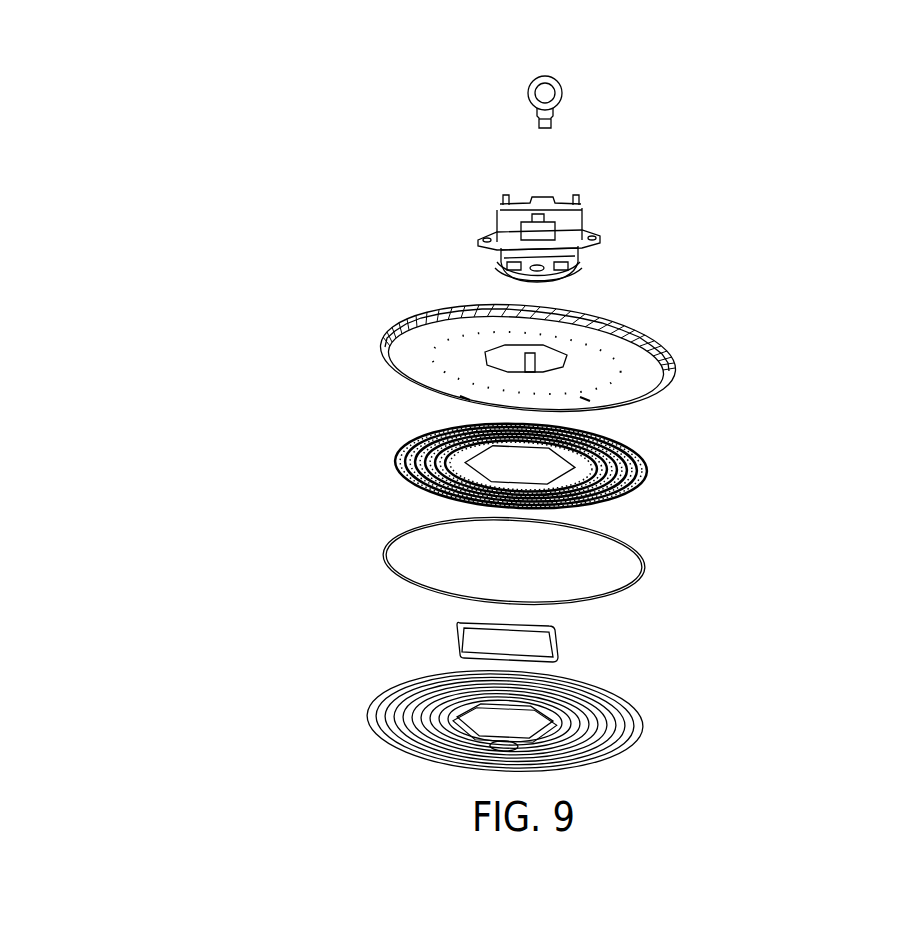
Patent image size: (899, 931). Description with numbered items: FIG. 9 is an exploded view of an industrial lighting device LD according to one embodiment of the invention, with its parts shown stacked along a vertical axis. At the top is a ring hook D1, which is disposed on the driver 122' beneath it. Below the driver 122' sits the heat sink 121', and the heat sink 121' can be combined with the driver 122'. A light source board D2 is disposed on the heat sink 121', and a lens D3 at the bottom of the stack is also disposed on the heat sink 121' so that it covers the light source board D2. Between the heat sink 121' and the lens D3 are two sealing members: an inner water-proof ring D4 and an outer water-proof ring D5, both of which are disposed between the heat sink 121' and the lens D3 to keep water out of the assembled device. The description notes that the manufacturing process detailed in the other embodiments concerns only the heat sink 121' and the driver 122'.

The industrial lighting device LD is at (290, 172).
The ring hook D1 is at (559, 113).
The driver 122' is at (613, 220).
The heat sink 121' is at (629, 352).
The light source board D2 is at (647, 476).
The outer water-proof ring D5 is at (645, 573).
The inner water-proof ring D4 is at (559, 658).
The lens D3 is at (643, 735).